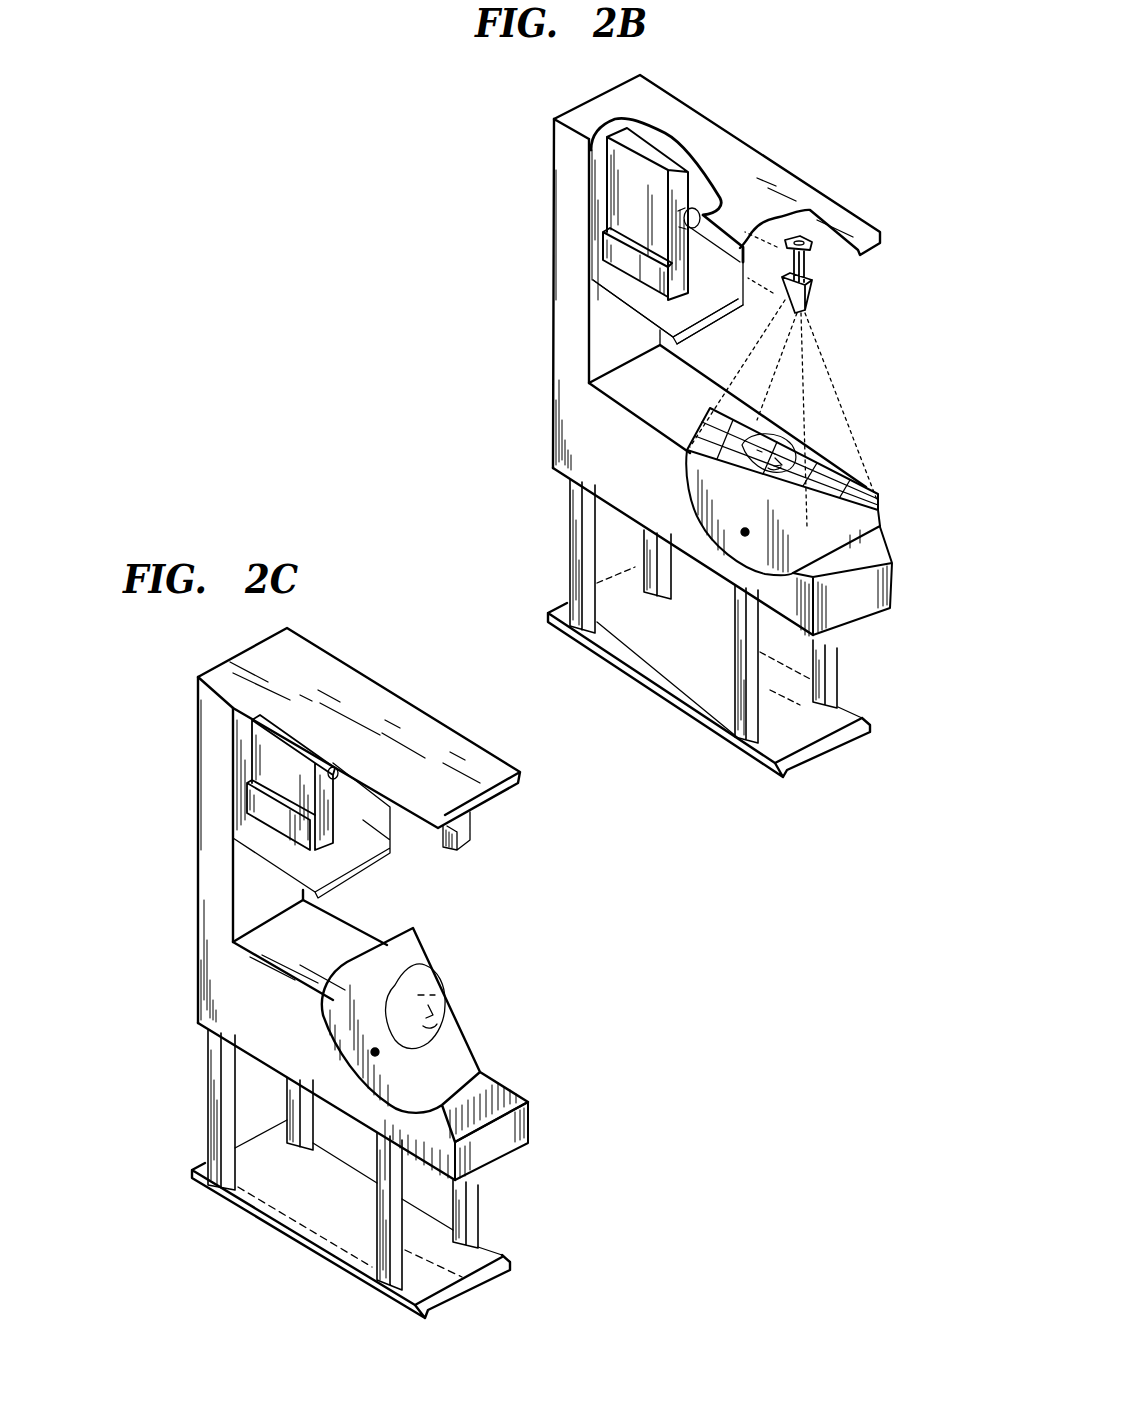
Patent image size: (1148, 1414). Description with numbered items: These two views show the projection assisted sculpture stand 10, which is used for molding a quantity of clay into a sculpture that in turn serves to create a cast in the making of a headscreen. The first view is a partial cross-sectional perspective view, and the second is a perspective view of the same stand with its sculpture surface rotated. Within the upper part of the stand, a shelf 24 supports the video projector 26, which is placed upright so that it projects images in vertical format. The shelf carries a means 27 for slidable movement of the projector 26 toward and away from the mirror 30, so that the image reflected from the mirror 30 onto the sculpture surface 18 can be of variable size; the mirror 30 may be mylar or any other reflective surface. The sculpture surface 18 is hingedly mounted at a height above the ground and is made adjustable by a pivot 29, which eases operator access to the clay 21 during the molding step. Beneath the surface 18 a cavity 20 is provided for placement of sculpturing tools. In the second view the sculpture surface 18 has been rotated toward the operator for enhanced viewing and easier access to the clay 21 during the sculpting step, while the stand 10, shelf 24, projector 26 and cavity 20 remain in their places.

In FIG. 2B, the projection assisted sculpture stand 10 is at (545, 326).
In FIG. 2C, the projection assisted sculpture stand 10 is at (190, 891).
In FIG. 2B, the sculpture surface 18 is at (857, 490).
In FIG. 2C, the sculpture surface 18 is at (488, 1060).
In FIG. 2B, the cavity 20 is at (857, 608).
In FIG. 2C, the cavity 20 is at (500, 1143).
In FIG. 2C, the clay 21 is at (413, 975).
In FIG. 2B, the shelf 24 is at (630, 295).
In FIG. 2B, the video projector 26 is at (622, 190).
In FIG. 2B, the means for slidable movement 27 is at (600, 251).
In FIG. 2B, the pivot 29 is at (742, 529).
In FIG. 2C, the pivot 29 is at (371, 1049).
In FIG. 2B, the mirror 30 is at (813, 296).